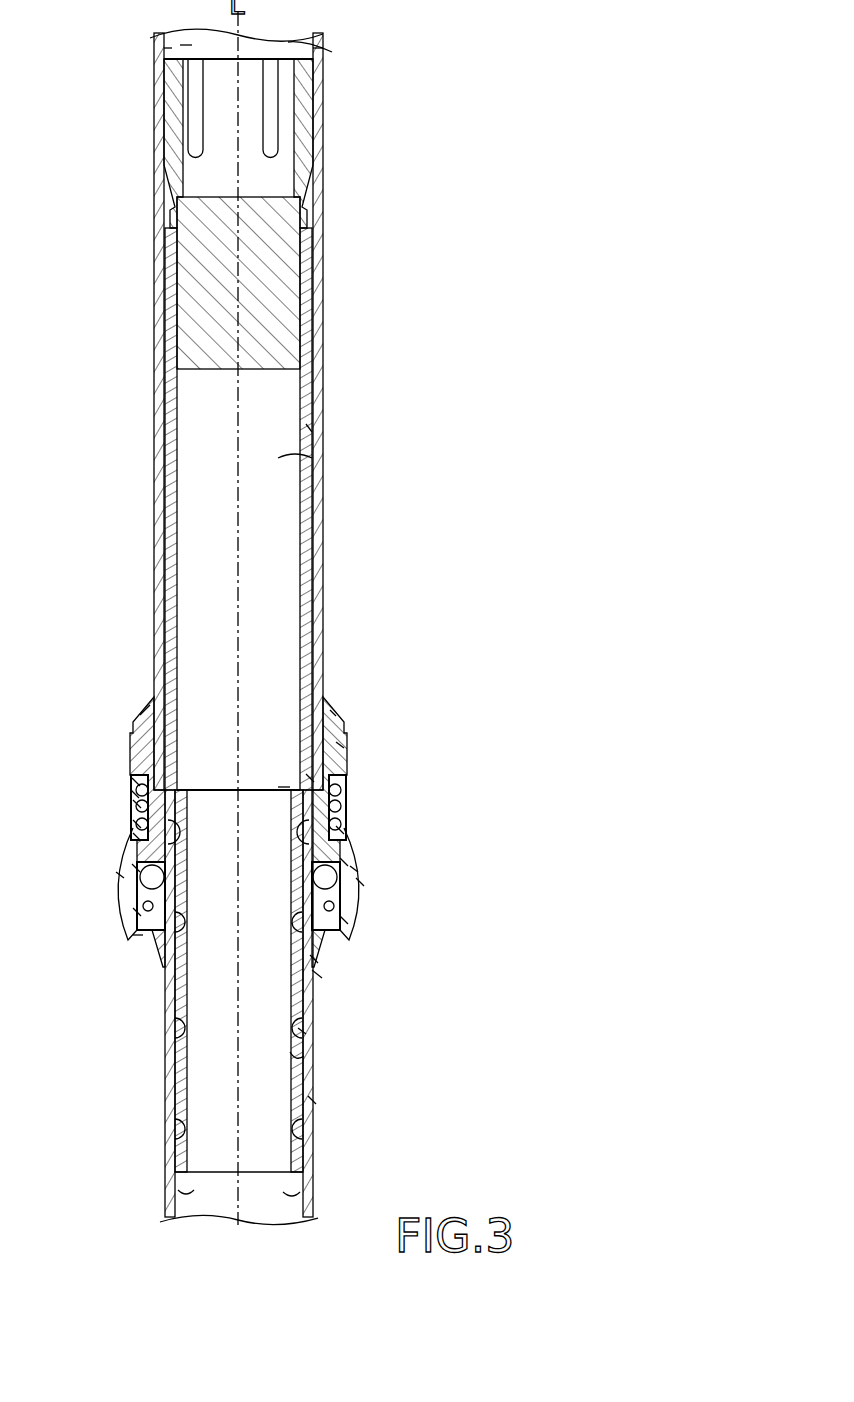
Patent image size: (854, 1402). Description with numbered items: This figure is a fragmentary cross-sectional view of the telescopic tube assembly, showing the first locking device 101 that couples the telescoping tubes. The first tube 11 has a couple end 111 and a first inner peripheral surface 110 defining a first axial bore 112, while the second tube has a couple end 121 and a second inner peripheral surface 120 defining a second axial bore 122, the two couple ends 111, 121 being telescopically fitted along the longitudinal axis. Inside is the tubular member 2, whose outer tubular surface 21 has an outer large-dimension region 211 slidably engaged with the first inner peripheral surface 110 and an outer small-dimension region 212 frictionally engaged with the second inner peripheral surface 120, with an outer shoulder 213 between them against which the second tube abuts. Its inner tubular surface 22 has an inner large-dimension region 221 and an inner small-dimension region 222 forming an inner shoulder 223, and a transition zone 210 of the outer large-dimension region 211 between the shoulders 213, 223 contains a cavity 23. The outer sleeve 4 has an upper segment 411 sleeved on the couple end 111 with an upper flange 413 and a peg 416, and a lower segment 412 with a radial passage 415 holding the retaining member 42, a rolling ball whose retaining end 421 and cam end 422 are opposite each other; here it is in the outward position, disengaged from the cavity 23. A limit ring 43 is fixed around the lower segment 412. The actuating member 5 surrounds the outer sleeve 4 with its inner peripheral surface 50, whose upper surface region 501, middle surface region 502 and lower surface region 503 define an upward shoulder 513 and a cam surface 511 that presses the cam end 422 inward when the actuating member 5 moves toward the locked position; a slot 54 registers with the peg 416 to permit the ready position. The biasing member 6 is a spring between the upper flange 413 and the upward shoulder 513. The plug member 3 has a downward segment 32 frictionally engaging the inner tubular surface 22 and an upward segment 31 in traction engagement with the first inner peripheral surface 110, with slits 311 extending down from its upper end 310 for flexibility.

The tubular member 2 is at (258, 700).
The plug member 3 is at (229, 207).
The outer sleeve 4 is at (442, 660).
The actuating member 5 is at (188, 868).
The biasing member 6 is at (340, 795).
The first tube 11 is at (318, 157).
The outer tubular surface 21 is at (168, 345).
The inner tubular surface 22 is at (182, 405).
The cavity 23 is at (340, 830).
The upward segment 31 is at (165, 137).
The downward segment 32 is at (160, 230).
The retaining member 42 is at (133, 885).
The limit ring 43 is at (333, 910).
The inner peripheral surface 50 is at (138, 938).
The slot 54 is at (135, 795).
The first locking device 101 is at (500, 695).
The first inner peripheral surface 110 is at (300, 48).
The couple end 111 is at (345, 862).
The first axial bore 112 is at (187, 45).
The second inner peripheral surface 120 is at (283, 1197).
The couple end 121 is at (315, 960).
The second axial bore 122 is at (183, 1195).
The transition zone 210 is at (312, 778).
The outer large-dimension region 211 is at (315, 428).
The outer small-dimension region 212 is at (315, 1100).
The outer shoulder 213 is at (303, 1030).
The inner large-dimension region 221 is at (278, 458).
The inner small-dimension region 222 is at (300, 1060).
The inner shoulder 223 is at (283, 787).
The upper end 310 is at (160, 46).
The slits 311 is at (192, 112).
The upper segment 411 is at (347, 709).
The lower segment 412 is at (318, 975).
The upper flange 413 is at (340, 745).
The passage 415 is at (356, 870).
The peg 416 is at (137, 782).
The retaining end 421 is at (345, 920).
The cam end 422 is at (137, 868).
The upper surface region 501 is at (137, 805).
The middle surface region 502 is at (138, 838).
The lower surface region 503 is at (137, 912).
The cam surface 511 is at (120, 875).
The upward shoulder 513 is at (137, 825).